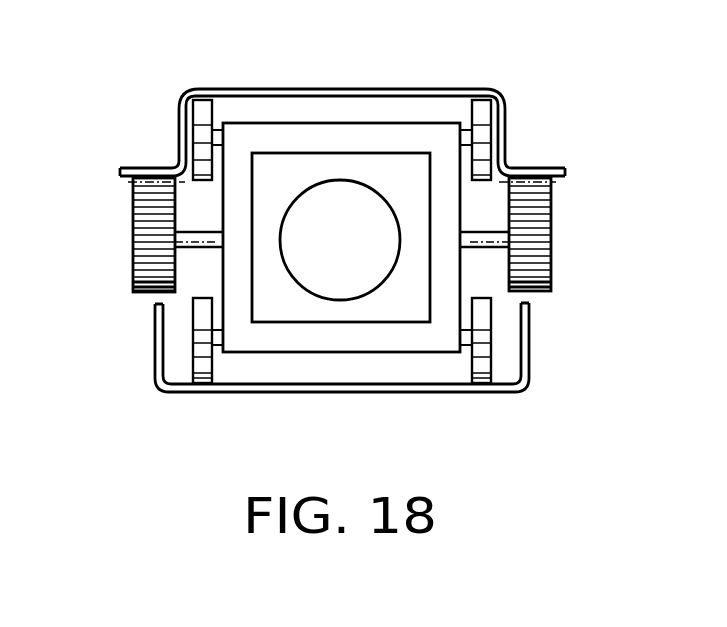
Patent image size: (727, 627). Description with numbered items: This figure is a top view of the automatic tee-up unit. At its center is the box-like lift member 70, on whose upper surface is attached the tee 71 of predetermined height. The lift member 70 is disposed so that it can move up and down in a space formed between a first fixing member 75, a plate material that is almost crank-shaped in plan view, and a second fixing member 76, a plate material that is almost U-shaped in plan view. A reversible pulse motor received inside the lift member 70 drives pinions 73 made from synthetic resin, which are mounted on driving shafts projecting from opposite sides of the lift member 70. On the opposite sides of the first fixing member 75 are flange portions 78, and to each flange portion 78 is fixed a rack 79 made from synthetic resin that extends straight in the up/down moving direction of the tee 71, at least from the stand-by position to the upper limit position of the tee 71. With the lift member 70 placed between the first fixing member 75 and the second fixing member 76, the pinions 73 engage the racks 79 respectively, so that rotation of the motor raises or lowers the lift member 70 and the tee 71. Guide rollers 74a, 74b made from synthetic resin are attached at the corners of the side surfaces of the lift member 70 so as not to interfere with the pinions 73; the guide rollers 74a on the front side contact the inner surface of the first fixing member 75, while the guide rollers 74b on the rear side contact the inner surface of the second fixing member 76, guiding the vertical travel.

The lift member 70 is at (292, 347).
The tee 71 is at (348, 275).
The pinion 73 is at (133, 263).
The guide roller 74a is at (202, 123).
The guide roller 74b is at (203, 330).
The first fixing member 75 is at (322, 88).
The second fixing member 76 is at (413, 392).
The flange portion 78 is at (142, 165).
The rack 79 is at (130, 183).